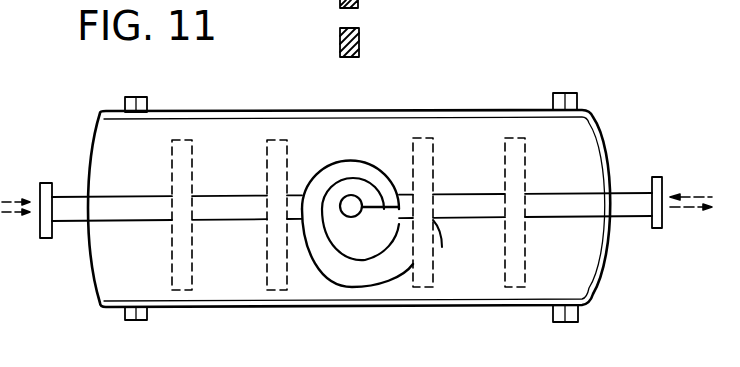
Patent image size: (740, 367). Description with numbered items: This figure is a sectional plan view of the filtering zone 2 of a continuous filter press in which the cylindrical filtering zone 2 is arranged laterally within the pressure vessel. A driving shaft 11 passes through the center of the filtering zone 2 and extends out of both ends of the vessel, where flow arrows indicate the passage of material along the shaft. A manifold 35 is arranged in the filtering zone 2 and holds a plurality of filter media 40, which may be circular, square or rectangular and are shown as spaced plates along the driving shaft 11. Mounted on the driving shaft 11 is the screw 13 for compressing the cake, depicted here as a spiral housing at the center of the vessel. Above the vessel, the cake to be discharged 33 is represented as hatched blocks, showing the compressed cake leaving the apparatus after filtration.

The filtering zone 2 is at (608, 144).
The driving shaft 11 is at (348, 214).
The screw 13 is at (368, 171).
The cake to be discharged 33 is at (360, 32).
The manifold 35 is at (125, 221).
The filter media 40 is at (170, 165).